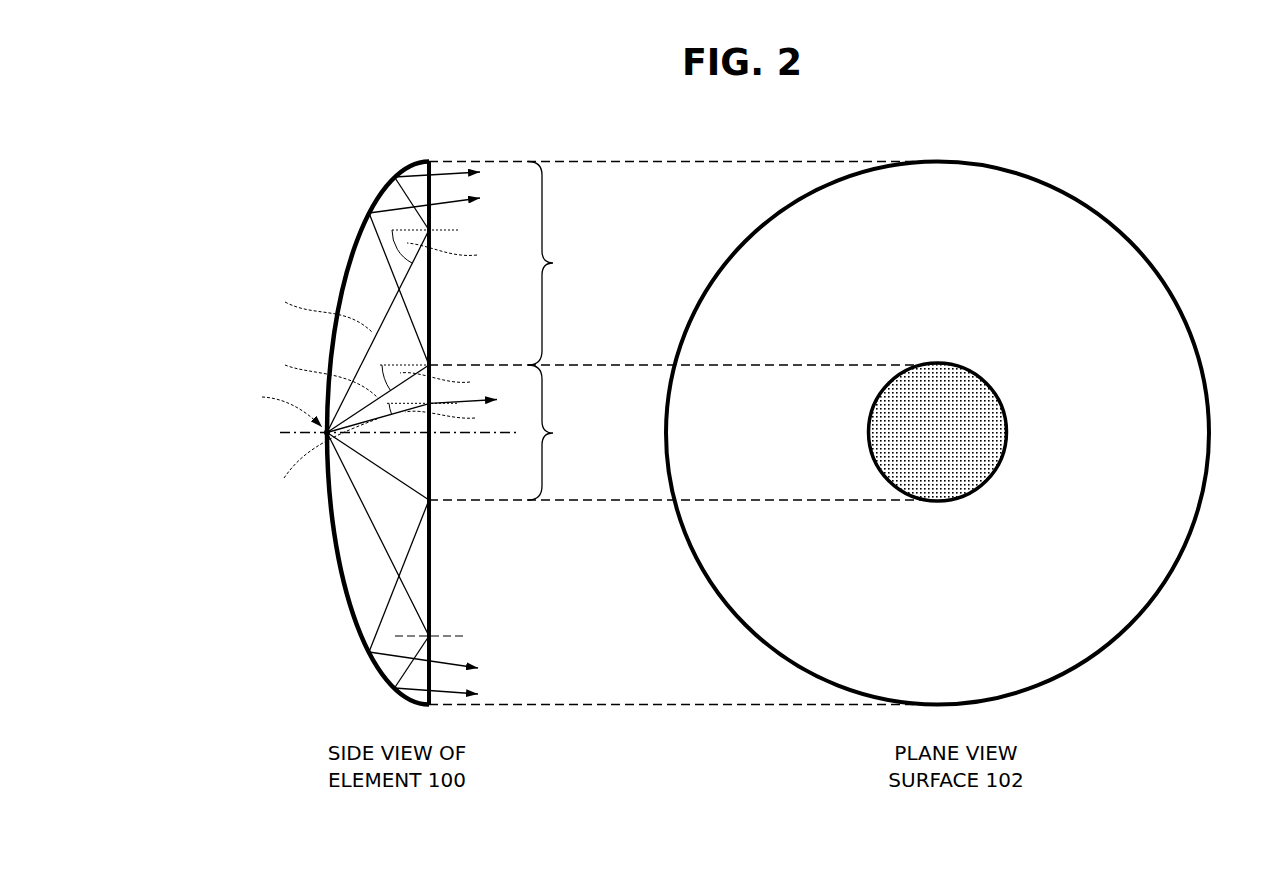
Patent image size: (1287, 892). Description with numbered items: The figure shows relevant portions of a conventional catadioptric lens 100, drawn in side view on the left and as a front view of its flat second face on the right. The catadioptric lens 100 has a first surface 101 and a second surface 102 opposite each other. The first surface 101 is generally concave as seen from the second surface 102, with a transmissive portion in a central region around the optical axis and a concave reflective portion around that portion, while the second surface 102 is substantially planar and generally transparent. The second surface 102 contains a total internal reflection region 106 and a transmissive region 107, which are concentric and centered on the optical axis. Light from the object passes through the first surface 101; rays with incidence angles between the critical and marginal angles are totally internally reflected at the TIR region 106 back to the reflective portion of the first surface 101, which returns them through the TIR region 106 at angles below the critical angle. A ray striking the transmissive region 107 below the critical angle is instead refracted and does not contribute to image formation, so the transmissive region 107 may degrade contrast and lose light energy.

The catadioptric lens 100 is at (391, 394).
The first surface 101 is at (345, 615).
The second surface 102 is at (433, 565).
The total internal reflection (TIR) region 106 is at (1180, 237).
The transmissive region 107 is at (963, 548).